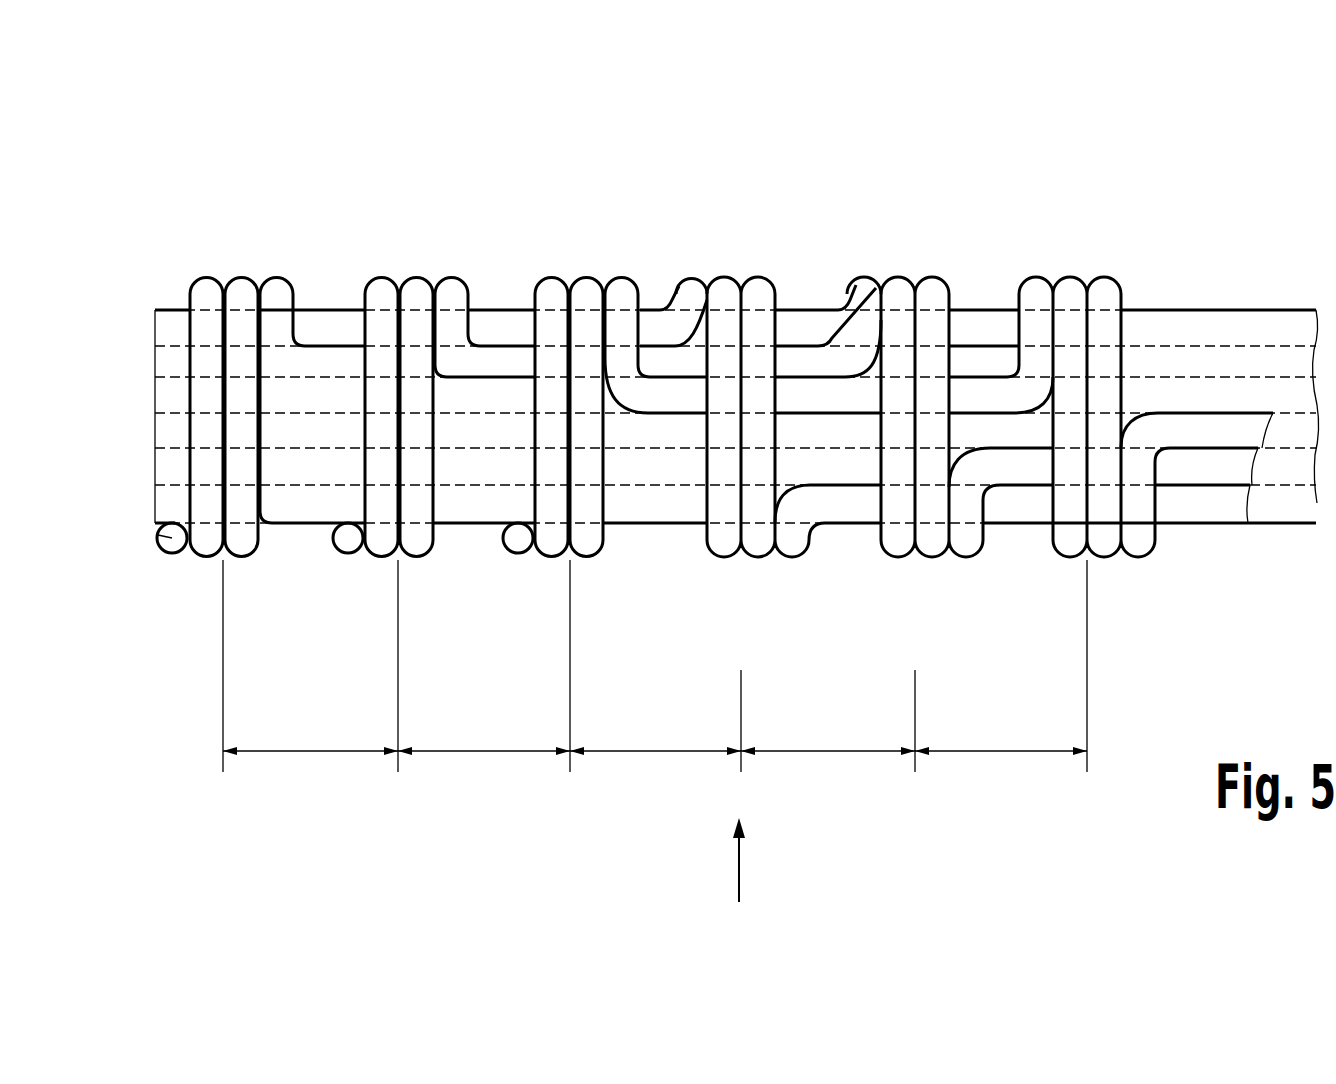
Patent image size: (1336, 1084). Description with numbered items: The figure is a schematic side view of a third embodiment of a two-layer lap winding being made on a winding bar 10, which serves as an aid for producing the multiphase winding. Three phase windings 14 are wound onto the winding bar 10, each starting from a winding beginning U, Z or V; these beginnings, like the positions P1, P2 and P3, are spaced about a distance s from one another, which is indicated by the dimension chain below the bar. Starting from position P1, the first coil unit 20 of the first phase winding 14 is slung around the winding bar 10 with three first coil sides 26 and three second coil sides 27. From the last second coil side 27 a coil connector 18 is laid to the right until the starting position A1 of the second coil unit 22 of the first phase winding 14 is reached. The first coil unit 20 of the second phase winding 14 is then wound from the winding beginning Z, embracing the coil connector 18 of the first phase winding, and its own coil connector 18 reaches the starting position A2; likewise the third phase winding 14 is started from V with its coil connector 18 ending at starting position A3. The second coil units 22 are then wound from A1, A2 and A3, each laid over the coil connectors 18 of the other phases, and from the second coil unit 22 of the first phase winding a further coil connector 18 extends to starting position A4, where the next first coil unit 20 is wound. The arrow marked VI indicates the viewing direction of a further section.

The winding bar 10 is at (1265, 320).
The phase winding 14 is at (681, 368).
The coil connector 18 is at (314, 318).
The first coil unit 20 is at (180, 262).
The second coil unit 22 is at (925, 233).
The first coil side 26 is at (247, 545).
The second coil side 27 is at (262, 277).
The starting position of the second coil unit of the first phase winding A1 is at (663, 207).
The starting position of the second coil unit of the second phase winding A2 is at (817, 230).
The starting position of the second coil unit of the third phase winding A3 is at (1028, 233).
The starting position of the next first coil unit A4 is at (1243, 510).
The first position P1 is at (223, 687).
The second position P2 is at (399, 687).
The third position P3 is at (570, 687).
The winding beginning of the first phase winding U is at (158, 524).
The winding beginning of the third phase winding V is at (518, 538).
The winding beginning of the second phase winding Z is at (348, 538).
The distance s is at (310, 753).
The section view indicator VI is at (737, 890).